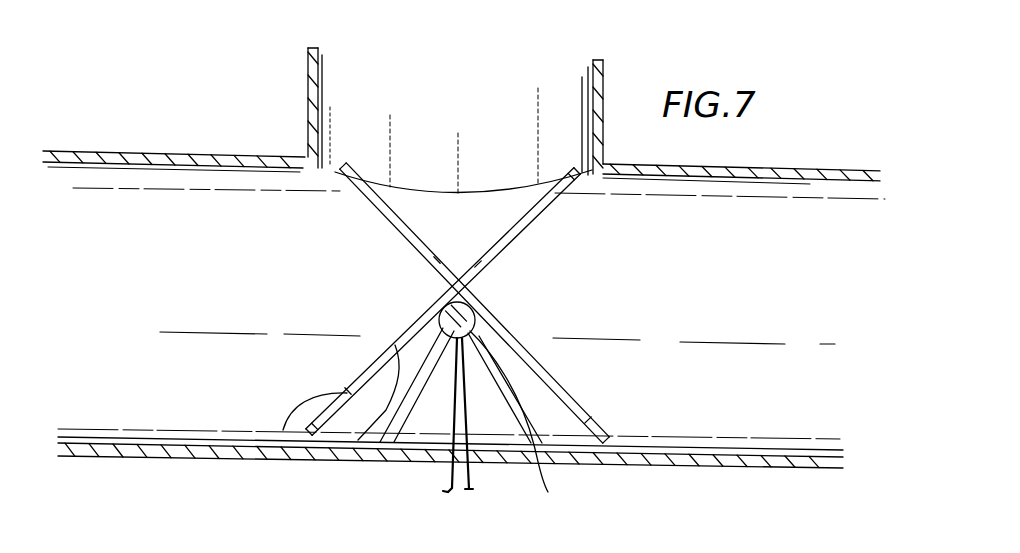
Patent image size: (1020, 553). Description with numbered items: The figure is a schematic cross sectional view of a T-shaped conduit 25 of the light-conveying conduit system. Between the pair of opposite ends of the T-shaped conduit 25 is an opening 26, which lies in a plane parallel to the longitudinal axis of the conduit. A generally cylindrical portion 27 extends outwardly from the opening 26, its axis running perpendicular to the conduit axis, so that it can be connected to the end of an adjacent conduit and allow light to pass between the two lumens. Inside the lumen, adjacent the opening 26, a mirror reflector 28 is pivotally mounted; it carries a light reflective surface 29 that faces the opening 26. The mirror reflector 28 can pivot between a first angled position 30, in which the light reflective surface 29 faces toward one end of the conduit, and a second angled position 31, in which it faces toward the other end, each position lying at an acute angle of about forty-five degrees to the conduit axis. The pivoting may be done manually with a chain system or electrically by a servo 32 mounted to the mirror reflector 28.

The T-shaped conduit 25 is at (116, 151).
The opening 26 is at (505, 137).
The cylindrical portion 27 is at (306, 82).
The mirror reflector 28 is at (370, 428).
The light reflective surface 29 is at (283, 428).
The first angled position 30 is at (337, 324).
The second angled position 31 is at (526, 335).
The servo 32 is at (467, 409).